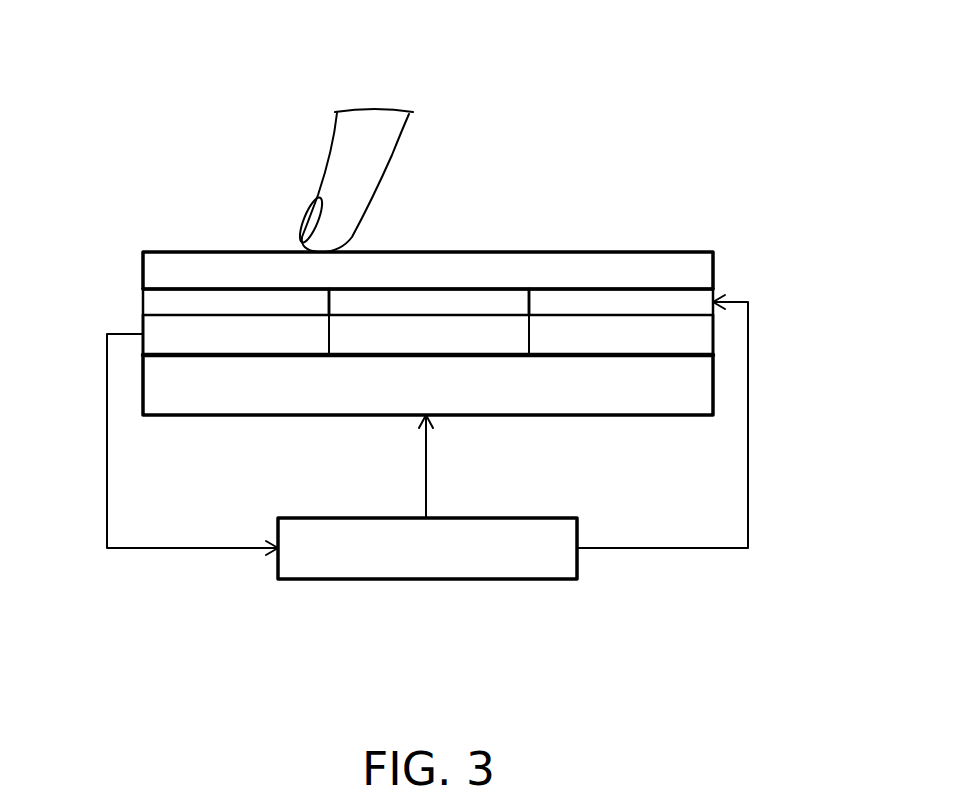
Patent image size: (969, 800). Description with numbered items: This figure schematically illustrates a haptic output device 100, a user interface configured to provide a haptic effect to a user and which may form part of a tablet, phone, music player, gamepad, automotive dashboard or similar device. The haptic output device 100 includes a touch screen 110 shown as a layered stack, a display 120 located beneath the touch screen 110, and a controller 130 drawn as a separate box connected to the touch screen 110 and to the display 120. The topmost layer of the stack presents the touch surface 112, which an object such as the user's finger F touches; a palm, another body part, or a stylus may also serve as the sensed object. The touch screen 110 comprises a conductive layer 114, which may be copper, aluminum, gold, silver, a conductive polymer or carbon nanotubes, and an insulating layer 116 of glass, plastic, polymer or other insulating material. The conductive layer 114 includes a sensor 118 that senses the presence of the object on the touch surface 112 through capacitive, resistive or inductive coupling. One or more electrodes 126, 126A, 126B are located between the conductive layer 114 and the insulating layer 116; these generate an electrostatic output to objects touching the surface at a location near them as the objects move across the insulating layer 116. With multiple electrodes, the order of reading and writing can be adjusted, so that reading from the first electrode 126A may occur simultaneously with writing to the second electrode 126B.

The haptic output device 100 is at (130, 100).
The touch screen 110 is at (115, 288).
The touch surface 112 is at (195, 250).
The conductive layer 114 is at (713, 330).
The insulating layer 116 is at (715, 268).
The sensor 118 is at (245, 333).
The display 120 is at (498, 417).
The electrode 126 is at (427, 305).
The first electrode 126A is at (202, 300).
The second electrode 126B is at (597, 305).
The controller 130 is at (292, 582).
The finger F is at (390, 160).